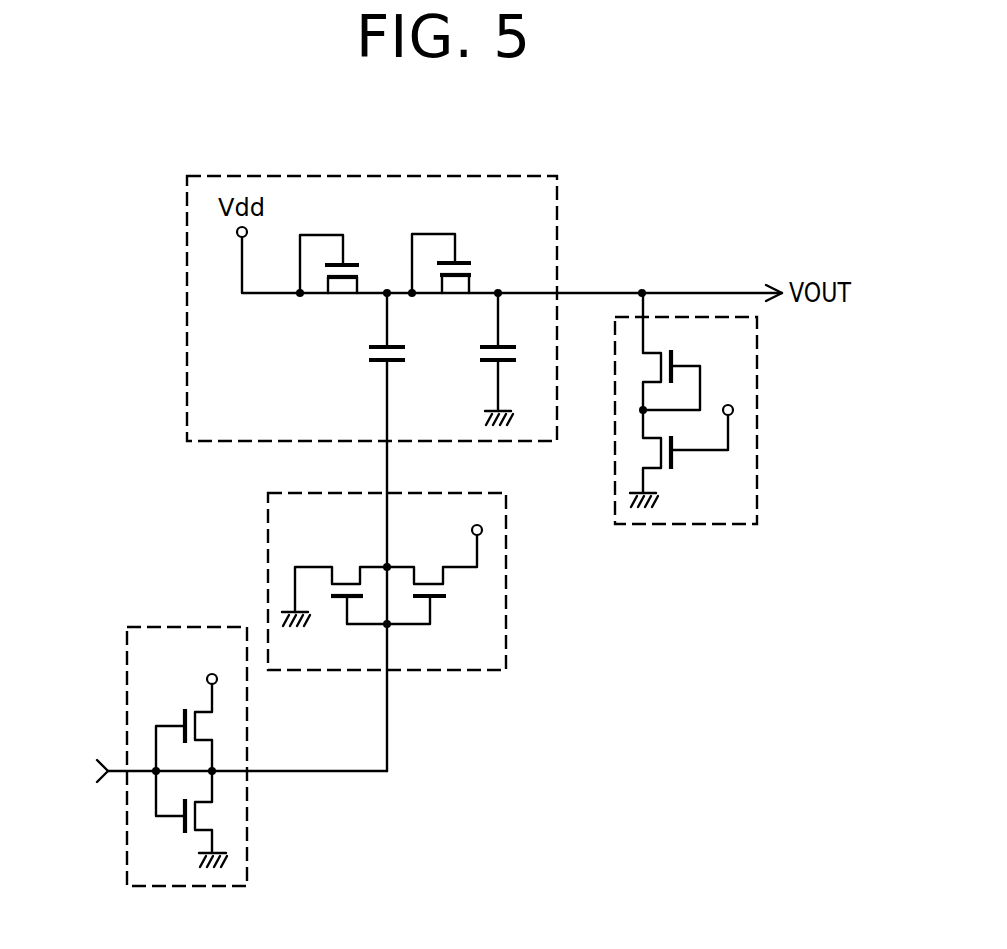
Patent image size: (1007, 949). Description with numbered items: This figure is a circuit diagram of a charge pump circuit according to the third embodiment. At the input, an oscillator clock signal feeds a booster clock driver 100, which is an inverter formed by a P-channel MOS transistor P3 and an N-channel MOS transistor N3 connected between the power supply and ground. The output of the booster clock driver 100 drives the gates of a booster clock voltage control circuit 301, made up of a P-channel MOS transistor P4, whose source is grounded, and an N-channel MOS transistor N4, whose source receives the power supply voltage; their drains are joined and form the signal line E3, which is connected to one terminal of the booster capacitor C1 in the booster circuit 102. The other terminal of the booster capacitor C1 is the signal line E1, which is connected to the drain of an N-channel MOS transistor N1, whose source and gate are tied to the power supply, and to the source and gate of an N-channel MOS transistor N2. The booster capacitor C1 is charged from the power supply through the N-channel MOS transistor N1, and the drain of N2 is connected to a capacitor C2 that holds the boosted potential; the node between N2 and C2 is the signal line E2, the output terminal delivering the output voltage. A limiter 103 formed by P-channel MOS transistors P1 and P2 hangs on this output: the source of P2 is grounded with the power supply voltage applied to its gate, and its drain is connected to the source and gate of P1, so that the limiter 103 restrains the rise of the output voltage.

The booster clock driver 100 is at (248, 850).
The booster circuit 102 is at (187, 396).
The limiter 103 is at (758, 497).
The booster clock voltage control circuit 301 is at (507, 636).
The N-channel MOS transistor N1 is at (330, 281).
The N-channel MOS transistor N2 is at (441, 280).
The N-channel MOS transistor N3 is at (198, 802).
The N-channel MOS transistor N4 is at (416, 582).
The P-channel MOS transistor P1 is at (659, 380).
The P-channel MOS transistor P2 is at (685, 422).
The P-channel MOS transistor P3 is at (197, 740).
The P-channel MOS transistor P4 is at (359, 582).
The booster capacitor C1 is at (400, 344).
The capacitor C2 is at (511, 359).
The signal line E1 is at (387, 293).
The signal line E2 is at (594, 293).
The signal line E3 is at (387, 472).